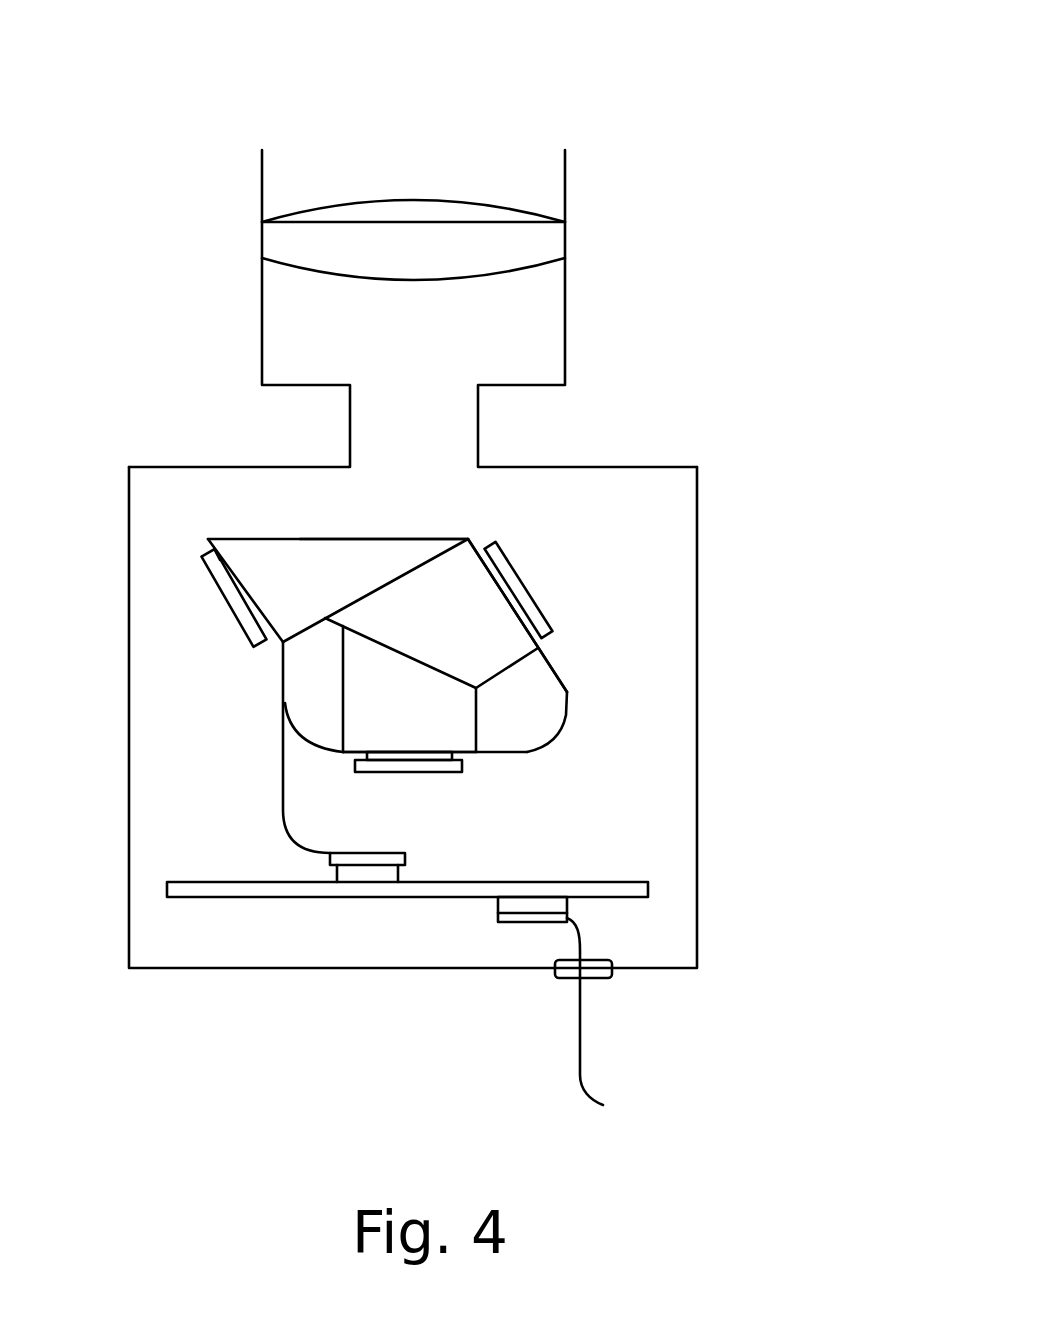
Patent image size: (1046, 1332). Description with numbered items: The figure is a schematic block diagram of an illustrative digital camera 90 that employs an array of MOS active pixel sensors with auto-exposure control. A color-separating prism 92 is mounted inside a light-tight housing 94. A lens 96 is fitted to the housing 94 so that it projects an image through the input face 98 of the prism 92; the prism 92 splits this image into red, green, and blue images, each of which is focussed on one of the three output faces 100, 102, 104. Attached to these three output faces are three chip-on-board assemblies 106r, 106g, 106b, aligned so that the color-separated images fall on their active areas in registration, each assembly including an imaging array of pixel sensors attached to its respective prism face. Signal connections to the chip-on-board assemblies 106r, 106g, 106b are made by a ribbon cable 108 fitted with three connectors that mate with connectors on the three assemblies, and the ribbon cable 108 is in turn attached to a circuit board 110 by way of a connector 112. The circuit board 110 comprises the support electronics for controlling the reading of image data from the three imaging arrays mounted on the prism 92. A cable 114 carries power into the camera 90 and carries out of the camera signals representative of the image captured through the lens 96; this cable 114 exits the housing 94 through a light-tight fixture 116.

The digital camera 90 is at (389, 146).
The color-separating prism 92 is at (447, 636).
The light-tight housing 94 is at (697, 683).
The lens 96 is at (533, 243).
The input face 98 is at (382, 540).
The output face 100 is at (212, 547).
The output face 102 is at (343, 757).
The output face 104 is at (477, 550).
The chip-on-board assembly 106r is at (245, 637).
The chip-on-board assembly 106g is at (528, 588).
The chip-on-board assembly 106b is at (462, 768).
The ribbon cable 108 is at (284, 758).
The circuit board 110 is at (230, 890).
The connector 112 is at (392, 853).
The cable 114 is at (580, 1062).
The light-tight fixture 116 is at (597, 978).